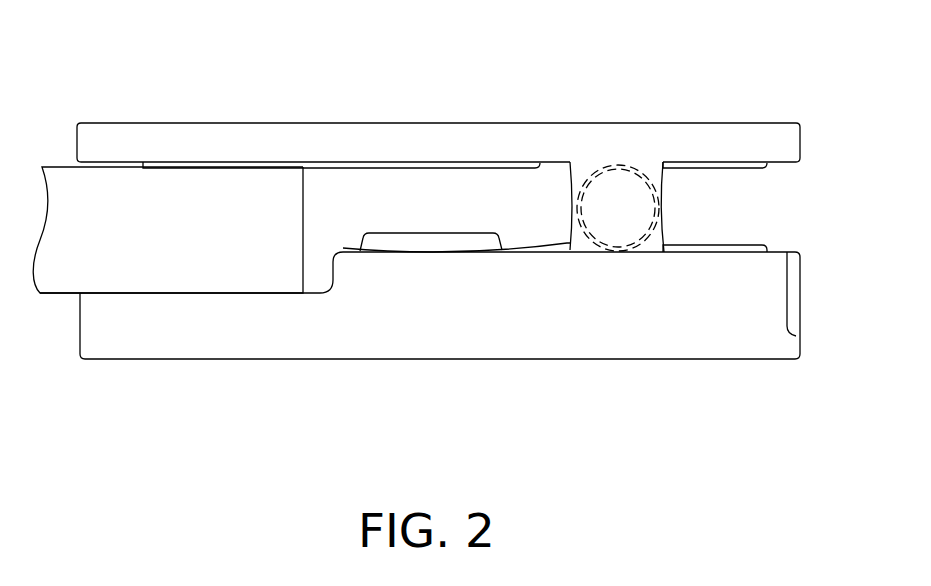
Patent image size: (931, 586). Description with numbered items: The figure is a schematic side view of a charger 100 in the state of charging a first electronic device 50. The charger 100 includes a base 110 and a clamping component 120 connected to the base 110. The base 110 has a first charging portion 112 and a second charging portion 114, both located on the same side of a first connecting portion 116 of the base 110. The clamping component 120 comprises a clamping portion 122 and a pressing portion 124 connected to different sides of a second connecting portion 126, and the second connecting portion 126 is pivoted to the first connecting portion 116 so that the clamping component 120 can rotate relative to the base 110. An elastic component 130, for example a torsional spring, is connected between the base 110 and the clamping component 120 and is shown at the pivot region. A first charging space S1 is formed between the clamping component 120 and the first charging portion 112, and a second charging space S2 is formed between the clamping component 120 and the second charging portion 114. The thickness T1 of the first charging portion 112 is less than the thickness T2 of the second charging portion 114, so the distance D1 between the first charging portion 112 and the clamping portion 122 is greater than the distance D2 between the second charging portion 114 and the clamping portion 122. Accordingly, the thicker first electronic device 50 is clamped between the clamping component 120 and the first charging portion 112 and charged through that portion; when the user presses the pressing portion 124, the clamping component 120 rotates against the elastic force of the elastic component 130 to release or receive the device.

The charger 100 is at (845, 477).
The base 110 is at (502, 418).
The first charging portion 112 is at (210, 337).
The second charging portion 114 is at (403, 277).
The first connecting portion 116 is at (582, 247).
The clamping component 120 is at (730, 53).
The clamping portion 122 is at (418, 126).
The pressing portion 124 is at (723, 144).
The second connecting portion 126 is at (617, 195).
The elastic component 130 is at (650, 178).
The first electronic device 50 is at (212, 210).
The first charging space S1 is at (127, 218).
The second charging space S2 is at (413, 222).
The distance between the first charging portion and the clamping component D1 is at (258, 167).
The distance between the second charging portion and the clamping component D2 is at (460, 167).
The thickness of the first charging portion T1 is at (258, 293).
The thickness of the second charging portion T2 is at (460, 250).